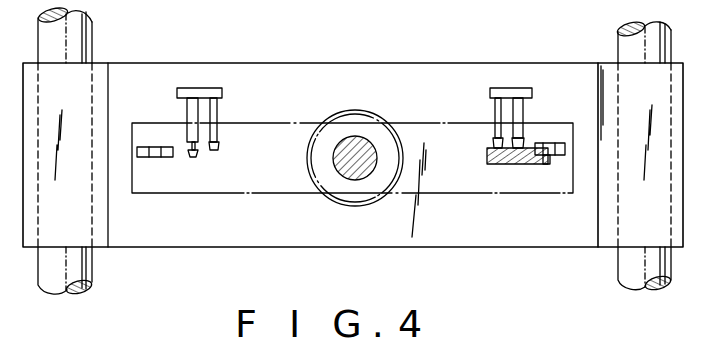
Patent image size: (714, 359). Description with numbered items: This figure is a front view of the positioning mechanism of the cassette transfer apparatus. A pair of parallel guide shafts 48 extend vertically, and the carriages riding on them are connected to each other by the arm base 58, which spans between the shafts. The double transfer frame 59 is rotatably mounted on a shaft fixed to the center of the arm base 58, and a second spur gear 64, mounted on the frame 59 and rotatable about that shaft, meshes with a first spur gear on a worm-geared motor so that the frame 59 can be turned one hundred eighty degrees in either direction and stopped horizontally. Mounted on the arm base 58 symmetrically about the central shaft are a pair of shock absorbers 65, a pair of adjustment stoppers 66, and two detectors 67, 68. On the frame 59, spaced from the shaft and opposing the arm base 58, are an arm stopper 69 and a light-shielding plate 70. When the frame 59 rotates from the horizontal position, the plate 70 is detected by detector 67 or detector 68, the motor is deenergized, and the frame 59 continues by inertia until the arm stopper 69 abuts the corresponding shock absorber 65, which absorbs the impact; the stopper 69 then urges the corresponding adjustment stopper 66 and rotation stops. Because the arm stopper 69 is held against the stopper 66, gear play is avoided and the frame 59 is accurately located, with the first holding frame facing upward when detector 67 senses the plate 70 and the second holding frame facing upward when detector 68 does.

The guide shaft 48 is at (78, 43).
The arm base 58 is at (205, 247).
The double transfer frame 59 is at (273, 186).
The second spur gear 64 is at (346, 110).
The shock absorber 65 is at (178, 110).
The adjustment stopper 66 is at (218, 110).
The detector 67 is at (563, 157).
The detector 68 is at (158, 158).
The arm stopper 69 is at (500, 166).
The light-shielding plate 70 is at (547, 166).